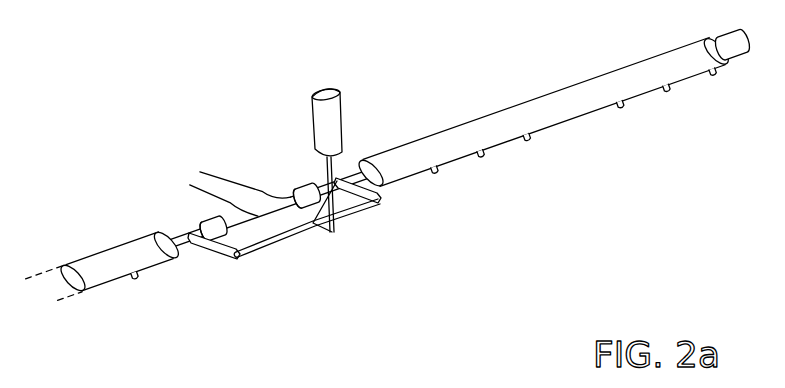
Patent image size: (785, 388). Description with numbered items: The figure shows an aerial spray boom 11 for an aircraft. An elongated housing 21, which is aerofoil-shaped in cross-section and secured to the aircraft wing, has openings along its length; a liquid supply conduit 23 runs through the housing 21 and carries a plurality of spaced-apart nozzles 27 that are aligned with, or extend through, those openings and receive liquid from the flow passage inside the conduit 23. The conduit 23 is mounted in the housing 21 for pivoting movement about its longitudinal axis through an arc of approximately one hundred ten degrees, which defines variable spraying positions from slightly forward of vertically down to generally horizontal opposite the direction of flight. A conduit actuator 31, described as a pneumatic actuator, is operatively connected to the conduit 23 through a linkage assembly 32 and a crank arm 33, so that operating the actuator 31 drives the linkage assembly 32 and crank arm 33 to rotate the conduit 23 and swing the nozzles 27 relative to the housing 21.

The aerial spray boom 11 is at (389, 178).
The elongated housing 21 is at (97, 267).
The liquid supply conduit 23 is at (182, 247).
The nozzles 27 is at (437, 176).
The conduit actuator 31 is at (323, 127).
The linkage assembly 32 is at (337, 248).
The crank arm 33 is at (227, 250).